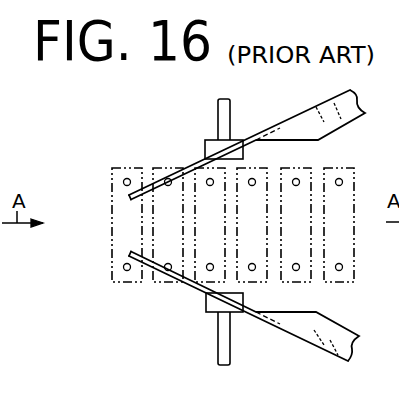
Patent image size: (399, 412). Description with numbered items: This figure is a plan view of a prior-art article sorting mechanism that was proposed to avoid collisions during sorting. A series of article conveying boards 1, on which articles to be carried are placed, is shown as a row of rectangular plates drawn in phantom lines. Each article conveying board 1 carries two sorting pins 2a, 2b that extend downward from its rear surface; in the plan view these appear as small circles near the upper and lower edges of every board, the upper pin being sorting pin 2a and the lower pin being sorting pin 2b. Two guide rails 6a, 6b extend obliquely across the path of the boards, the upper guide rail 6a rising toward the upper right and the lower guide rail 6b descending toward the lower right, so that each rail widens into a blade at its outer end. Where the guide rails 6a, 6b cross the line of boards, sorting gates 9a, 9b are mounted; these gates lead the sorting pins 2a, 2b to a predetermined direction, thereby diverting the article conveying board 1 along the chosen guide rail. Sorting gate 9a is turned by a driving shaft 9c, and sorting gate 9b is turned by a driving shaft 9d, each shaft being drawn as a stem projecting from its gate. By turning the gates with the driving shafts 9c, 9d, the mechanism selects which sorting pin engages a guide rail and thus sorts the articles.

The article conveying board 1 is at (123, 241).
The sorting pin 2a is at (255, 180).
The sorting pin 2b is at (300, 270).
The guide rail 6a is at (306, 124).
The guide rail 6b is at (305, 336).
The sorting gate 9a is at (193, 163).
The sorting gate 9b is at (187, 288).
The driving shaft 9c is at (218, 116).
The driving shaft 9d is at (218, 348).